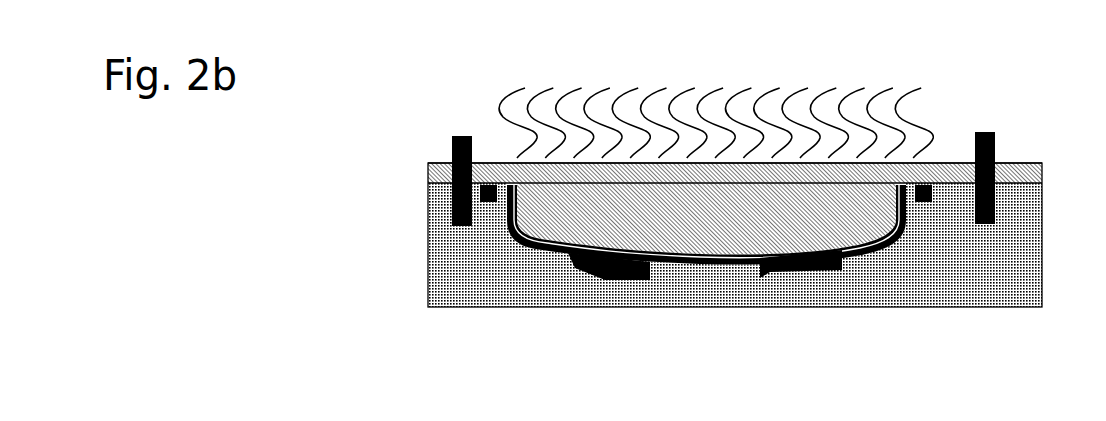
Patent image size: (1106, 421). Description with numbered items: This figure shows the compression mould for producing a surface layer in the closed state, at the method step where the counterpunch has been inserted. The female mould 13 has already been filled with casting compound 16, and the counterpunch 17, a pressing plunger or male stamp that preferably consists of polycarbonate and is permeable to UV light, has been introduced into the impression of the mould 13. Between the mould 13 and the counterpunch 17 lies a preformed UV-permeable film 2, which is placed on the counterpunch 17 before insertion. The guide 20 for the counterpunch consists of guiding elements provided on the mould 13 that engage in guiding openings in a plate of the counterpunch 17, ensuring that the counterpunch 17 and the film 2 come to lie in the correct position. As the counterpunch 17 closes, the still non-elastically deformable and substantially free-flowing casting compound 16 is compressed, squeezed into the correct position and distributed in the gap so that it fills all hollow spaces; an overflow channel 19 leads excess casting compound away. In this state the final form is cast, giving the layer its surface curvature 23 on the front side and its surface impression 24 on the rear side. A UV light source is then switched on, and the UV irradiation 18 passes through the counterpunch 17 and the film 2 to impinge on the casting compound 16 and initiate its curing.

The UV-permeable film 2 is at (654, 248).
The mould 13 is at (483, 254).
The casting compound 16 is at (593, 247).
The counterpunch 17 is at (722, 183).
The UV irradiation 18 is at (832, 102).
The overflow channel 19 is at (929, 166).
The guide for counterpunch 20 is at (1002, 165).
The surface curvature on the front side 23 is at (883, 252).
The surface impression on the rear side 24 is at (878, 225).